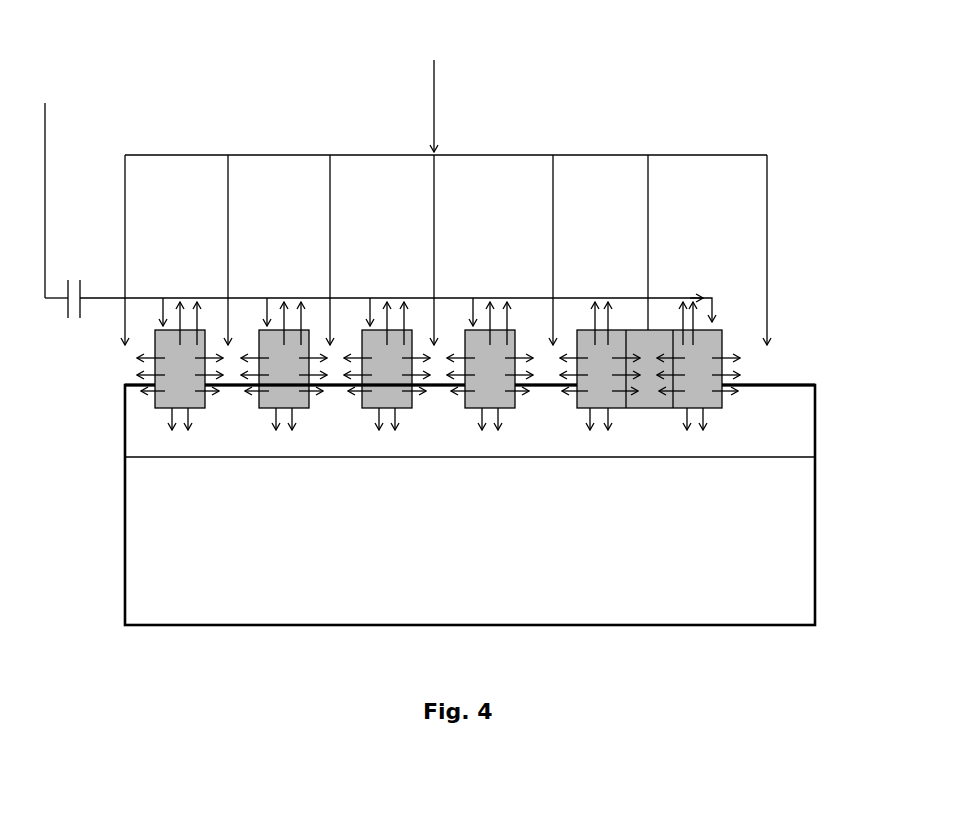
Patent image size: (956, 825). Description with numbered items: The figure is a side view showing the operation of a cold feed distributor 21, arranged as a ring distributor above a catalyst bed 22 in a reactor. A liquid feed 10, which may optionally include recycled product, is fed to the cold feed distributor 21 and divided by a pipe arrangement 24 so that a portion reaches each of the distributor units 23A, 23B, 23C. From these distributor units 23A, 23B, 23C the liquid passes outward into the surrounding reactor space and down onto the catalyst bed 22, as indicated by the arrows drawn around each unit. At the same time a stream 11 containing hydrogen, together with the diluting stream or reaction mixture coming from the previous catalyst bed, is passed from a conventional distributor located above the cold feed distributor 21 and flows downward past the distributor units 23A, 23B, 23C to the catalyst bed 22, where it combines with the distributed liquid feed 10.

The liquid feed 10 is at (45, 150).
The stream containing hydrogen 11 is at (434, 95).
The cold feed distributor 21 is at (110, 300).
The catalyst bed 22 is at (800, 560).
The distributor unit 23A is at (265, 328).
The distributor unit 23B is at (471, 328).
The distributor unit 23C is at (663, 330).
The pipe arrangement 24 is at (142, 298).